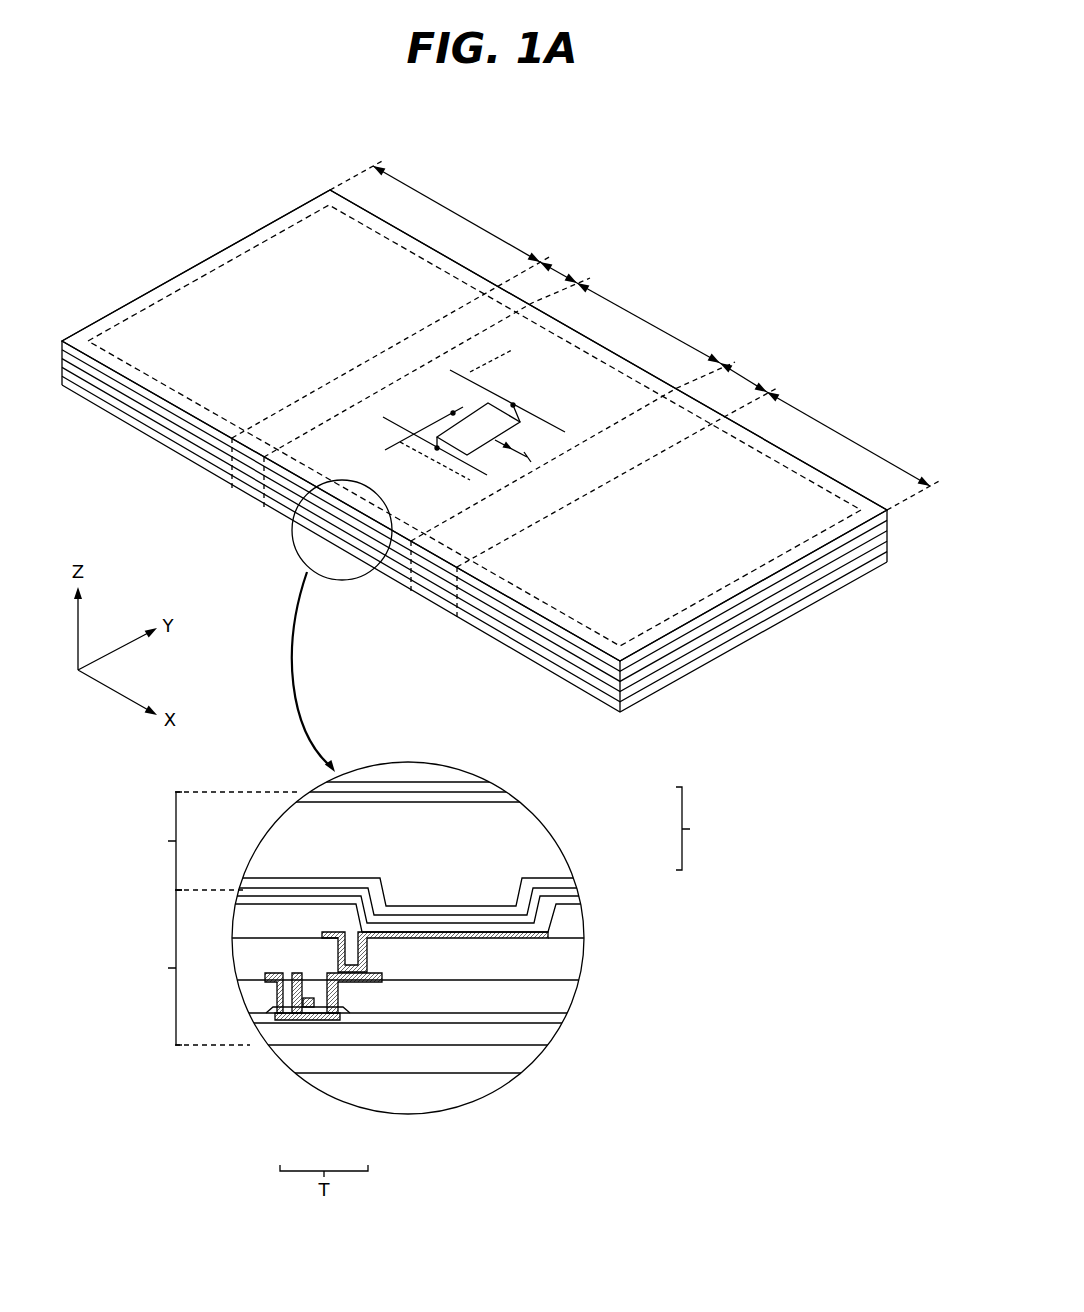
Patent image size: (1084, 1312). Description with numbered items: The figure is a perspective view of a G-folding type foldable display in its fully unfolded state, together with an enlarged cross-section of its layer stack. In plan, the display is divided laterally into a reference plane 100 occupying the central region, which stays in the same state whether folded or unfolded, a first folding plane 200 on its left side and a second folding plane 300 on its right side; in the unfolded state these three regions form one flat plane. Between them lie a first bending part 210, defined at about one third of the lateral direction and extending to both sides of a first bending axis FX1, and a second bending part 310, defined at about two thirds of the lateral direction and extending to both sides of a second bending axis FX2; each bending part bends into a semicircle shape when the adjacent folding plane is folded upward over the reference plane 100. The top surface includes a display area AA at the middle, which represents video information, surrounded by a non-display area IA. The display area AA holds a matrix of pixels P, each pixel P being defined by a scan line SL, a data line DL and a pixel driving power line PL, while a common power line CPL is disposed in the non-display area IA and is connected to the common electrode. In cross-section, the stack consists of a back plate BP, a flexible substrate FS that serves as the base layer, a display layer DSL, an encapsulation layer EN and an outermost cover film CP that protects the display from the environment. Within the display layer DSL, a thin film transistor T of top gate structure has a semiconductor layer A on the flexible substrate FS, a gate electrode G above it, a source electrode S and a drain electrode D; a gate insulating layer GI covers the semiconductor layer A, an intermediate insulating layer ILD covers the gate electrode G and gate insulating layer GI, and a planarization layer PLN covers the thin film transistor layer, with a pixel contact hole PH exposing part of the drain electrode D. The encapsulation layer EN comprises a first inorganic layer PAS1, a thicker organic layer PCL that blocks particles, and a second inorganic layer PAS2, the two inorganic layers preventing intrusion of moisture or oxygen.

The display area AA is at (216, 292).
The non-display area IA is at (248, 238).
The first bending axis FX1 is at (312, 408).
The second bending axis FX2 is at (622, 460).
The first folding plane 200 is at (456, 214).
The first bending part 210 is at (568, 269).
The reference plane 100 is at (648, 323).
The second bending part 310 is at (746, 375).
The second folding plane 300 is at (848, 439).
The pixel P is at (528, 406).
The pixel driving power line PL is at (456, 369).
The data line DL is at (380, 416).
The scan line SL is at (390, 453).
The common power line CPL is at (530, 456).
The cover film CP is at (432, 786).
The encapsulation layer EN is at (814, 571).
The second inorganic layer PAS2 is at (535, 813).
The organic layer PCL is at (548, 841).
The first inorganic layer PAS1 is at (572, 885).
The planarization layer PLN is at (452, 962).
The pixel contact hole PH is at (355, 946).
The intermediate insulating layer ILD is at (492, 1000).
The gate insulating layer GI is at (548, 1020).
The flexible substrate FS is at (545, 1033).
The back plate BP is at (522, 1058).
The display layer DSL is at (774, 601).
The source electrode S is at (275, 985).
The gate electrode G is at (307, 1010).
The semiconductor layer A is at (328, 1020).
The drain electrode D is at (356, 981).
The thin film transistor T is at (322, 1086).